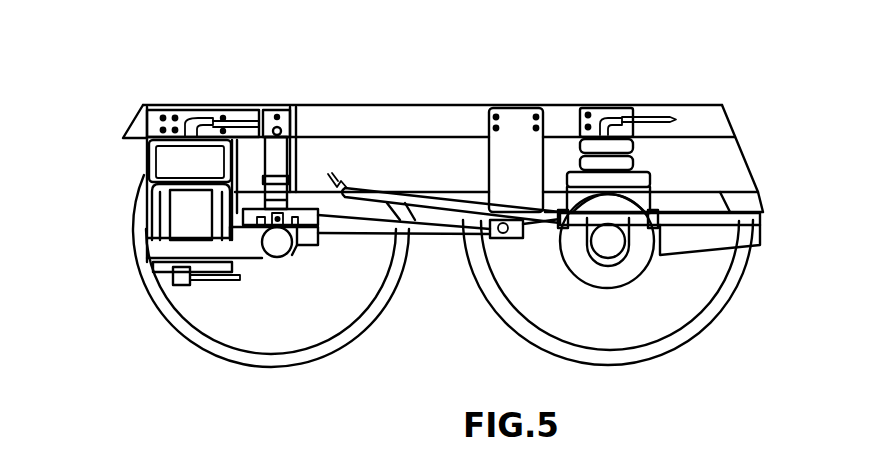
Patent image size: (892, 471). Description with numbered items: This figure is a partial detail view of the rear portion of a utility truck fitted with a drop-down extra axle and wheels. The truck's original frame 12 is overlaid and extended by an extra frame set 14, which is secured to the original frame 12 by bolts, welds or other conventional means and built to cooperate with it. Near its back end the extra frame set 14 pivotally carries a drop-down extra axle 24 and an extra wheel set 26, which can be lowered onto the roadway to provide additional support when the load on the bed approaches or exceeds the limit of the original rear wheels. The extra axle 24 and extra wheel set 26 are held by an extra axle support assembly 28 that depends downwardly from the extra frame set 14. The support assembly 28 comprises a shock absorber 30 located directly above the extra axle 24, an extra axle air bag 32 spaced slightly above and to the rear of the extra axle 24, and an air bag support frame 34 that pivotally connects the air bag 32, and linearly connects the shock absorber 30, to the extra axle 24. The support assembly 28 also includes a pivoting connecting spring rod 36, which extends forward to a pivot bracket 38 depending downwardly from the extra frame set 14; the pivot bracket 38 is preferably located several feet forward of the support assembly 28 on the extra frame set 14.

The original frame 12 is at (397, 163).
The extra frame set 14 is at (304, 112).
The drop-down extra axle 24 is at (268, 236).
The extra wheel set 26 is at (207, 303).
The extra axle support assembly 28 is at (101, 117).
The shock absorber 30 is at (261, 107).
The extra axle air bag 32 is at (187, 157).
The air bag support frame 34 is at (160, 260).
The pivoting connecting spring rod 36 is at (427, 228).
The pivot bracket 38 is at (522, 147).